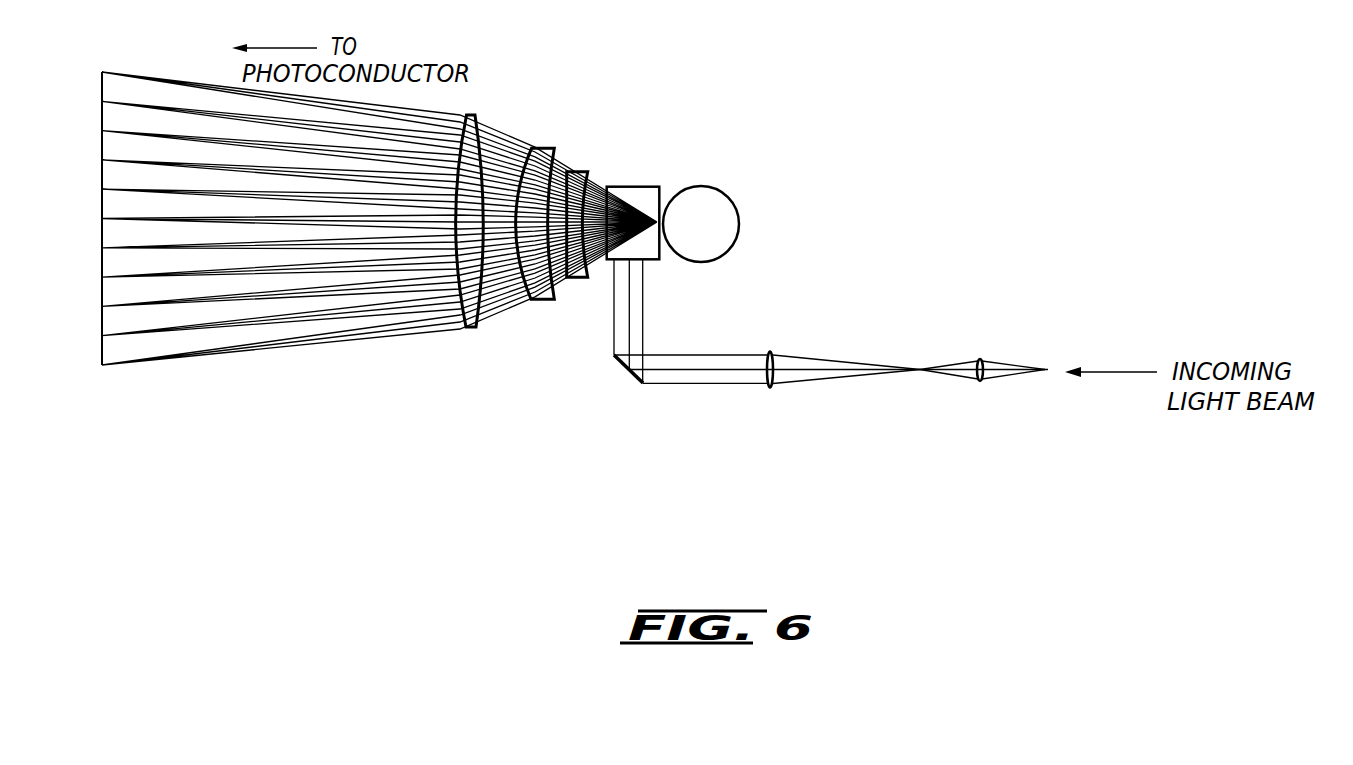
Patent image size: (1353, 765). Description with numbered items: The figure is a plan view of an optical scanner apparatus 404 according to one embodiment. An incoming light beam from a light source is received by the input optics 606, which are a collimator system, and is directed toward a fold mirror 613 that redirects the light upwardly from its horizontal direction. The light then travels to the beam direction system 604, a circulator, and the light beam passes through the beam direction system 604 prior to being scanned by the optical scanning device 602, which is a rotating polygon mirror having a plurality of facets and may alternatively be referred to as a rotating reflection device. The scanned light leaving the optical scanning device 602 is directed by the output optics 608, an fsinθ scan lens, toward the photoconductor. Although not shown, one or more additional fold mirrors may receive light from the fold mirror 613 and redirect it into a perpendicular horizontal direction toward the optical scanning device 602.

The optical scanner apparatus 404 is at (1128, 88).
The optical scanning device 602 is at (723, 186).
The beam direction system 604 is at (620, 186).
The input optics 606 is at (995, 409).
The output optics 608 is at (588, 344).
The fold mirror 613 is at (615, 358).